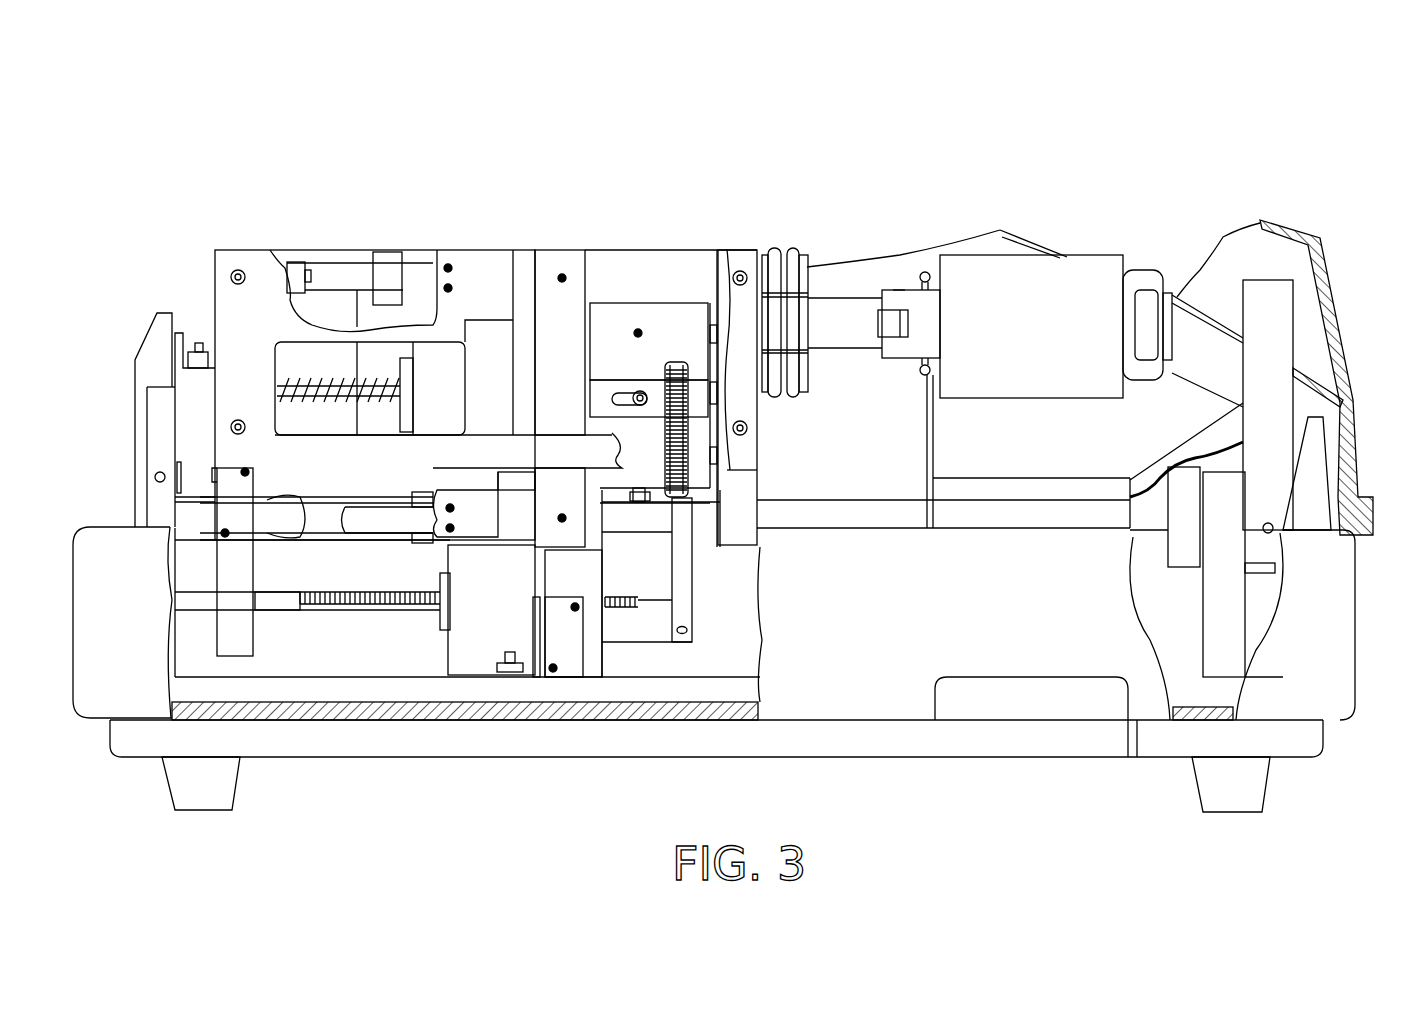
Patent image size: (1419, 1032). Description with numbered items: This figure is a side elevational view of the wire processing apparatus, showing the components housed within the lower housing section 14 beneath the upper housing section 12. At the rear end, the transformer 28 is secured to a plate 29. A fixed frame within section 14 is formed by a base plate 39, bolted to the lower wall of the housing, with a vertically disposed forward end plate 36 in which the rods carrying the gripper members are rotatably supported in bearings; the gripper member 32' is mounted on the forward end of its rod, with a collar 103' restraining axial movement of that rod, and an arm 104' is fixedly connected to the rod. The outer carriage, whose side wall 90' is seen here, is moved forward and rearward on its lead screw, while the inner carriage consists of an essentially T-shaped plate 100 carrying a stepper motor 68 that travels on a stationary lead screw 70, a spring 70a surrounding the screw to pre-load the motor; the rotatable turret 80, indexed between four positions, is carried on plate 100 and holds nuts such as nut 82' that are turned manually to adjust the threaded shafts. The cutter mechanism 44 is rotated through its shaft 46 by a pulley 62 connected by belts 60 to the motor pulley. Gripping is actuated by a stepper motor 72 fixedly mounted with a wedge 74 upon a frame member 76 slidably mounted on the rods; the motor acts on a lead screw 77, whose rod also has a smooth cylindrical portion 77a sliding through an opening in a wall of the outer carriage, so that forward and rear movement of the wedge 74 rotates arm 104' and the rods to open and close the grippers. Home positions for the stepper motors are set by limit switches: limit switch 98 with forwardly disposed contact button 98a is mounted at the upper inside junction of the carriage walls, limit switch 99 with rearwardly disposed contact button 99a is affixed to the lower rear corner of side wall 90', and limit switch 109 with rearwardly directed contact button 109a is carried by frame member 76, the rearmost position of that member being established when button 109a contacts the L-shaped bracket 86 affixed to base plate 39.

The upper housing section 12 is at (1288, 260).
The lower housing section 14 is at (757, 713).
The transformer 28 is at (198, 397).
The plate 29 is at (157, 343).
The gripper member 32' is at (1337, 377).
The forward end plate 36 is at (1228, 623).
The base plate 39 is at (763, 697).
The cutter mechanism 44 is at (1095, 218).
The shaft 46 is at (855, 335).
The belts 60 is at (793, 400).
The pulley 62 is at (783, 260).
The stepper motor 68 is at (498, 415).
The lead screw 70 is at (305, 378).
The spring 70a is at (375, 378).
The stepper motor 72 is at (458, 633).
The wedge 74 is at (630, 622).
The frame member 76 is at (565, 573).
The lead screw 77 is at (335, 610).
The smooth cylindrical portion 77a is at (280, 600).
The turret 80 is at (655, 328).
The nut 82' is at (666, 375).
The L-shaped bracket 86 is at (533, 622).
The side wall 90' is at (355, 348).
The limit switch 98 is at (298, 278).
The contact button 98a is at (308, 278).
The limit switch 99 is at (245, 500).
The contact button 99a is at (217, 477).
The T-shaped plate 100 is at (572, 267).
The collar 103' is at (1130, 560).
The arm 104' is at (718, 573).
The limit switch 109 is at (578, 660).
The contact button 109a is at (562, 668).